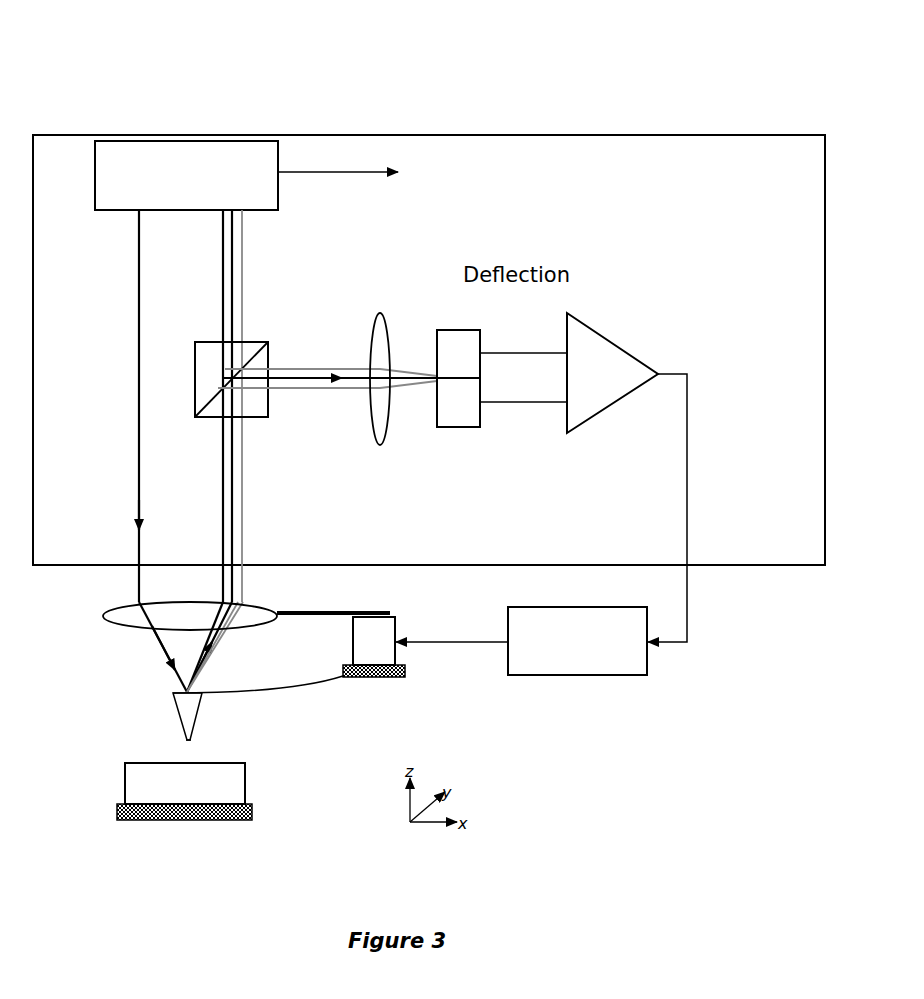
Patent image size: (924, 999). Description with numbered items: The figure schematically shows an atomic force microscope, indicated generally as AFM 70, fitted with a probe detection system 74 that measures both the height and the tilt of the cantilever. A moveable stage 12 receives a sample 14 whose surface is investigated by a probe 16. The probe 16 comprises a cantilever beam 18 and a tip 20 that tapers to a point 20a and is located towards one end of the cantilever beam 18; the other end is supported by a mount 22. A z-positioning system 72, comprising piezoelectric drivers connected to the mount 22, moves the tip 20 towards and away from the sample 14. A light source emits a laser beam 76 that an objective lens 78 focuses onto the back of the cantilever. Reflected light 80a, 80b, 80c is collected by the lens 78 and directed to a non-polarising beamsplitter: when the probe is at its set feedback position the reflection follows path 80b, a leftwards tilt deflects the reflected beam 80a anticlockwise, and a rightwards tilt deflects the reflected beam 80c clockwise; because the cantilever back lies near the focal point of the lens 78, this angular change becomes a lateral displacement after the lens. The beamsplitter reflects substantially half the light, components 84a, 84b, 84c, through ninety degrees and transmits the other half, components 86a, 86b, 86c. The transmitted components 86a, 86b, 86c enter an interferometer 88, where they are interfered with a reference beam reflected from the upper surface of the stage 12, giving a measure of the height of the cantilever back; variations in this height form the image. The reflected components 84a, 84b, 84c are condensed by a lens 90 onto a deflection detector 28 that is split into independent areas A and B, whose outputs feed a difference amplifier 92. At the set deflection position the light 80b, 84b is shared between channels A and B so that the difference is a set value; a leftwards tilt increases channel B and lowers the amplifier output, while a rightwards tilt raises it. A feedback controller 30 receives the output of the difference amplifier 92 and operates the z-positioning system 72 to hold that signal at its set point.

The moveable stage 12 is at (147, 821).
The sample 14 is at (125, 777).
The probe 16 is at (229, 715).
The cantilever beam 18 is at (250, 694).
The tip 20 is at (185, 705).
The point 20a is at (186, 740).
The mount 22 is at (405, 677).
The deflection detector 28 is at (466, 428).
The feedback controller 30 is at (623, 675).
The AFM 70 is at (97, 83).
The z-positioning system 72 is at (395, 625).
The detection system 74 is at (543, 133).
The laser beam 76 is at (139, 288).
The objective lens 78 is at (102, 615).
The reflected beam 80a is at (223, 457).
The reflected beam 80b is at (232, 497).
The reflected beam 80c is at (244, 537).
The reflected component 84a is at (293, 390).
The reflected component 84b is at (318, 379).
The reflected component 84c is at (320, 369).
The transmitted component 86a is at (223, 297).
The transmitted component 86b is at (232, 271).
The transmitted component 86c is at (243, 260).
The interferometer 88 is at (278, 194).
The lens 90 is at (381, 313).
The difference amplifier 92 is at (618, 345).